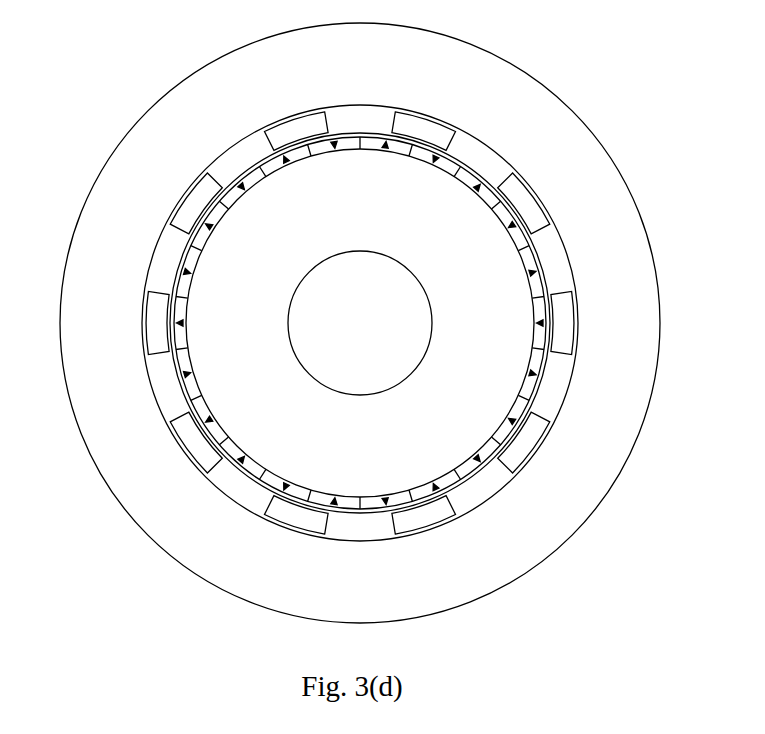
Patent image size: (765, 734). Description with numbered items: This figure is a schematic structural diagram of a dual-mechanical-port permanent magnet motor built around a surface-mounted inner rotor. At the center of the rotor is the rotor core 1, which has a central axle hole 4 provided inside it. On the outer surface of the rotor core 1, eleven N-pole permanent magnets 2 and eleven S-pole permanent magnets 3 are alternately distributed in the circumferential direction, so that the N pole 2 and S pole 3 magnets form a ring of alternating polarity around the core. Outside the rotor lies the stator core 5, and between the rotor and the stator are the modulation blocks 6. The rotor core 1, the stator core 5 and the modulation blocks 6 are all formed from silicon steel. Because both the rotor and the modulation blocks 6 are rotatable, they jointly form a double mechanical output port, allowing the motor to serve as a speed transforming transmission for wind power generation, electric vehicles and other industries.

The rotor core 1 is at (248, 293).
The N pole 2 is at (528, 393).
The S pole 3 is at (247, 173).
The central axle hole 4 is at (327, 358).
The stator core 5 is at (578, 147).
The modulation block 6 is at (562, 313).